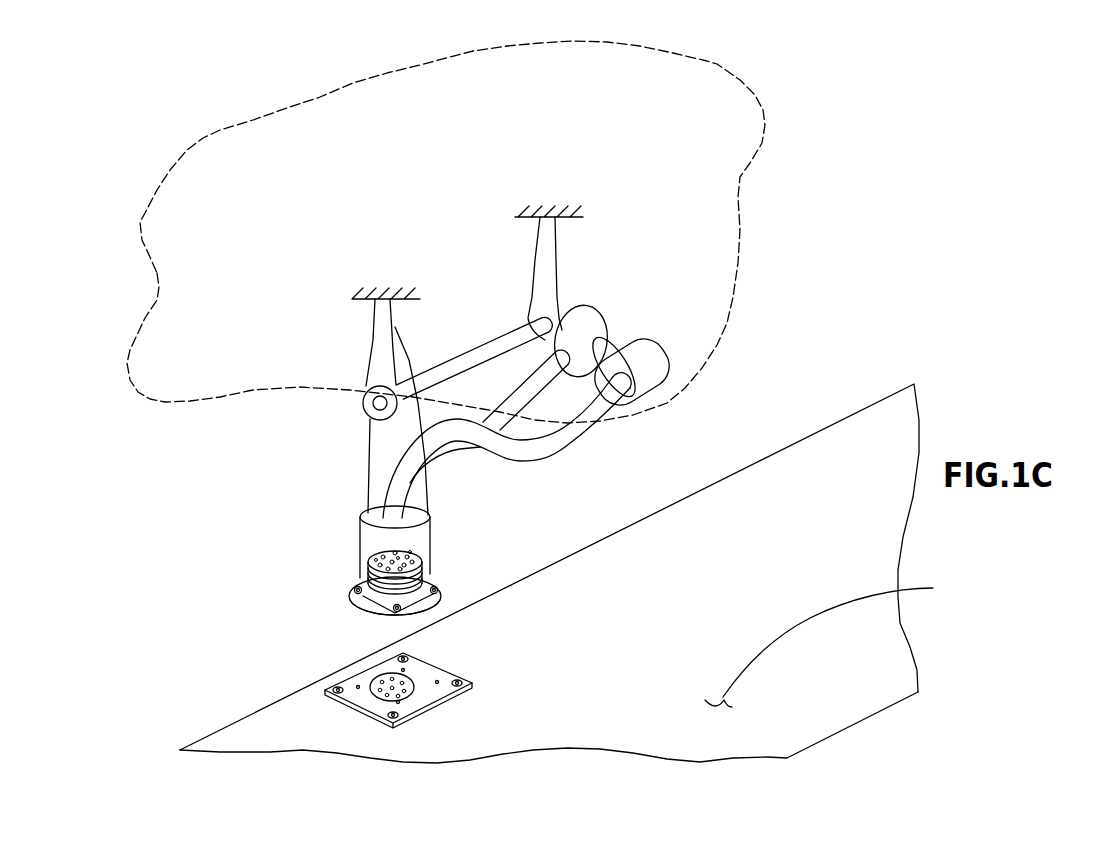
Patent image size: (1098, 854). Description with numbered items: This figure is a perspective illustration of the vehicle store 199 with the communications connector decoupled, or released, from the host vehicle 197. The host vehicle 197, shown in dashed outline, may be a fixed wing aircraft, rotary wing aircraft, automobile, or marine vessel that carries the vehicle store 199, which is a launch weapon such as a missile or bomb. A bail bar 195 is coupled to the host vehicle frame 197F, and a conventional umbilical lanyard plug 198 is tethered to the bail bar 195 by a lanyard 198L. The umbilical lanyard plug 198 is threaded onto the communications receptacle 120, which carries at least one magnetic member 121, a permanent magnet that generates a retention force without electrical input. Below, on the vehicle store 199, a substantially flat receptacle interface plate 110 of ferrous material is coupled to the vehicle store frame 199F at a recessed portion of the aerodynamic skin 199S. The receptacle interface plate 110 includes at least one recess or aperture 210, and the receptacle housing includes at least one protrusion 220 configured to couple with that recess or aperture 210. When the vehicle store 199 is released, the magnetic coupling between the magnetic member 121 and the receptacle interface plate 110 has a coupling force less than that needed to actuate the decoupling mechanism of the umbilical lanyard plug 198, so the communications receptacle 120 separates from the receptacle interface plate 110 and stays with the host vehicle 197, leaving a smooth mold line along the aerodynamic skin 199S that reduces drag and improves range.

The host vehicle 197 is at (717, 63).
The host vehicle frame 197F is at (363, 302).
The bail bar 195 is at (467, 347).
The lanyard 198L is at (370, 463).
The umbilical lanyard plug 198 is at (433, 539).
The communications receptacle 120 is at (372, 553).
The magnetic member 121 is at (355, 607).
The protrusion 220 is at (395, 615).
The receptacle interface plate 110 is at (345, 688).
The recess or aperture 210 is at (397, 703).
The vehicle store 199 is at (580, 556).
The aerodynamic skin 199S is at (842, 638).
The vehicle store frame 199F is at (850, 718).